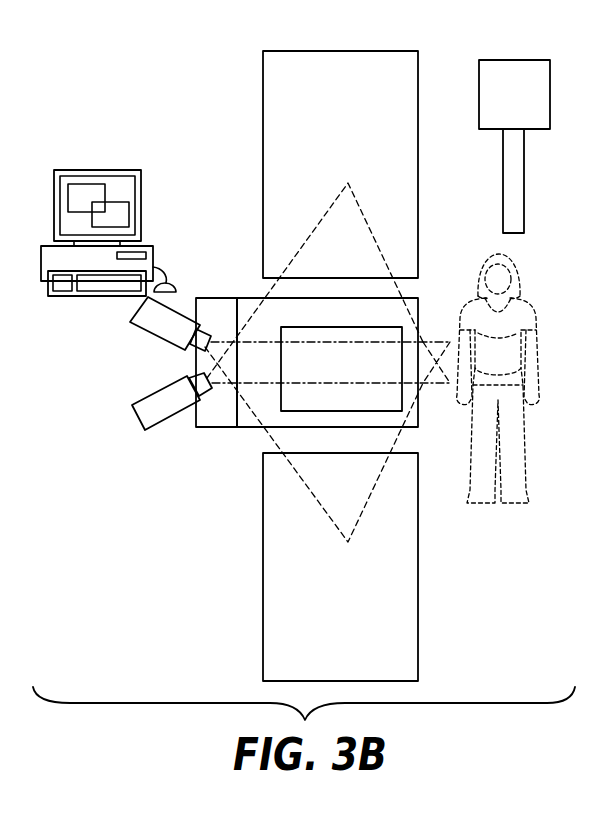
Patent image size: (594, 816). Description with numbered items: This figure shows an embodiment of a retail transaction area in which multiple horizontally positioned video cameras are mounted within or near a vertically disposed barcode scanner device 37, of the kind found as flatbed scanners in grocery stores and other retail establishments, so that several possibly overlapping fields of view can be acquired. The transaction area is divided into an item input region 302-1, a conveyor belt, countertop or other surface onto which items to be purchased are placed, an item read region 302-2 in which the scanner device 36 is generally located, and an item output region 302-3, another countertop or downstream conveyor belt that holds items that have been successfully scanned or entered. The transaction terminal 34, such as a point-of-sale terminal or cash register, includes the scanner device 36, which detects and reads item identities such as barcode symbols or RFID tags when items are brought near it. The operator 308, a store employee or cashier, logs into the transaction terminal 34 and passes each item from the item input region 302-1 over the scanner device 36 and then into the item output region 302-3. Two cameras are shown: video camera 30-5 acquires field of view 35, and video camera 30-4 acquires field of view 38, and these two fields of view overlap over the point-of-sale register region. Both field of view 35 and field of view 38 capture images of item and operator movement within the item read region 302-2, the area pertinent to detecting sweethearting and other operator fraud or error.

The transaction terminal 34 is at (88, 170).
The video camera 30-4 is at (148, 332).
The video camera 30-5 is at (143, 428).
The vertically disposed barcode scanner device 37 is at (227, 420).
The item input region 302-1 is at (412, 78).
The item read region 302-2 is at (410, 320).
The scanner device 36 is at (382, 404).
The field of view 35 is at (358, 202).
The field of view 38 is at (375, 490).
The item output region 302-3 is at (412, 682).
The operator 308 is at (517, 360).